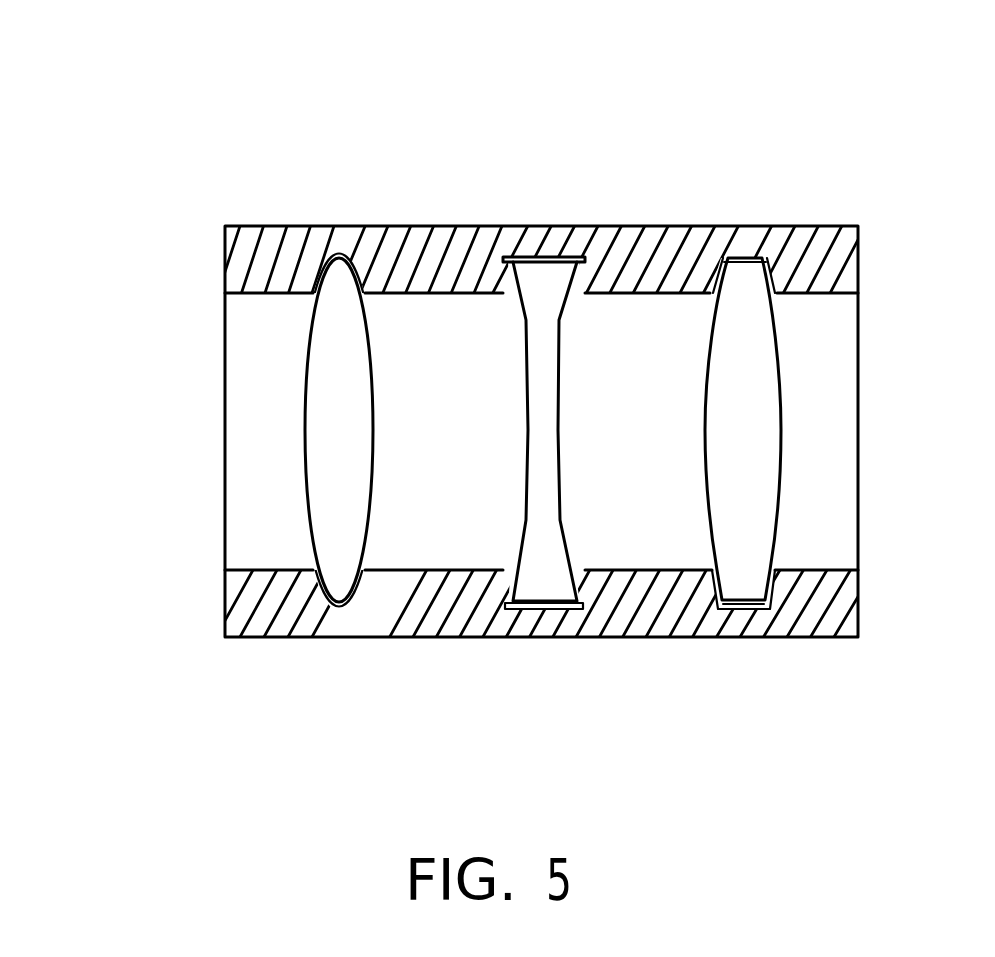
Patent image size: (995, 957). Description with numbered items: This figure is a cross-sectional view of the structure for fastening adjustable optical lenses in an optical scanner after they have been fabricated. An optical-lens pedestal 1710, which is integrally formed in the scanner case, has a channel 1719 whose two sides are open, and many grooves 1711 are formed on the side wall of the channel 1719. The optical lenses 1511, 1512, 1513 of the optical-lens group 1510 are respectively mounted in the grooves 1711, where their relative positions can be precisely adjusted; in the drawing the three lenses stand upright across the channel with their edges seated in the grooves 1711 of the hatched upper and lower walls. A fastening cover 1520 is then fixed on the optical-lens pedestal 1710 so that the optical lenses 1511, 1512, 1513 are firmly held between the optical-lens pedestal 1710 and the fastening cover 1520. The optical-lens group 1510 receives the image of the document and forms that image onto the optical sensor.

The optical-lens group 1510 is at (702, 88).
The optical lens 1511 is at (338, 347).
The optical lens 1512 is at (540, 290).
The optical lens 1513 is at (750, 306).
The fastening cover 1520 is at (233, 270).
The optical-lens pedestal 1710 is at (255, 610).
The grooves 1711 is at (735, 610).
The channel 1719 is at (277, 568).